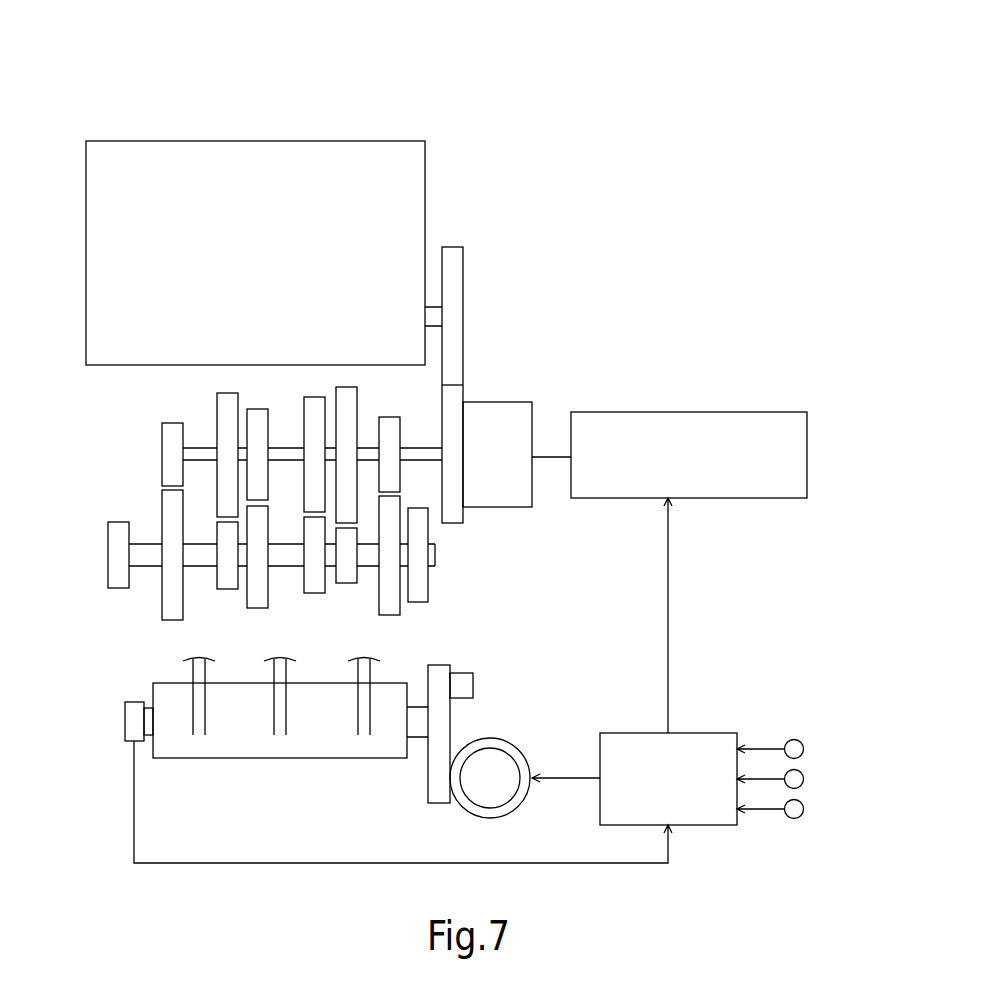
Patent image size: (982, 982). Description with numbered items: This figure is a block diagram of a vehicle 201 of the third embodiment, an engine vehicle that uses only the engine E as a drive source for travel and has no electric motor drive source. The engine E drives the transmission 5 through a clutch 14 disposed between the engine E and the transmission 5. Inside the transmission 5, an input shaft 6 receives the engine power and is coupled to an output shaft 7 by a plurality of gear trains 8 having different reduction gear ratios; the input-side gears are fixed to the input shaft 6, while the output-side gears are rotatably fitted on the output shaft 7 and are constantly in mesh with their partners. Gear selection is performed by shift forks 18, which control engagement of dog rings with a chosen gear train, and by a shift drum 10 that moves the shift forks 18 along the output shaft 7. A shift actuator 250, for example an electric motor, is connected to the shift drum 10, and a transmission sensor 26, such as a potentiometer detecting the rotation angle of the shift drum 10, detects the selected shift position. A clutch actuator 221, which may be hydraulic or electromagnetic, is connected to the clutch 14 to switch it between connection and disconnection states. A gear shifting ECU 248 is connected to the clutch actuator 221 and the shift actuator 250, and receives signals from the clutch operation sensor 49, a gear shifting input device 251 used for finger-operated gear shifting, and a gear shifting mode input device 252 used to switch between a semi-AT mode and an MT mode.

The vehicle 201 is at (590, 123).
The engine E is at (340, 140).
The transmission 5 is at (233, 508).
The input shaft 6 is at (203, 447).
The output shaft 7 is at (271, 563).
The gear trains 8 is at (268, 583).
The clutch 14 is at (497, 400).
The clutch actuator 221 is at (675, 410).
The shift drum 10 is at (308, 741).
The shift forks 18 is at (288, 678).
The transmission sensor 26 is at (125, 718).
The shift actuator 250 is at (490, 738).
The gear shifting ECU 248 is at (693, 733).
The clutch operation sensor 49 is at (804, 749).
The gear shifting input device 251 is at (804, 779).
The gear shifting mode input device 252 is at (804, 809).